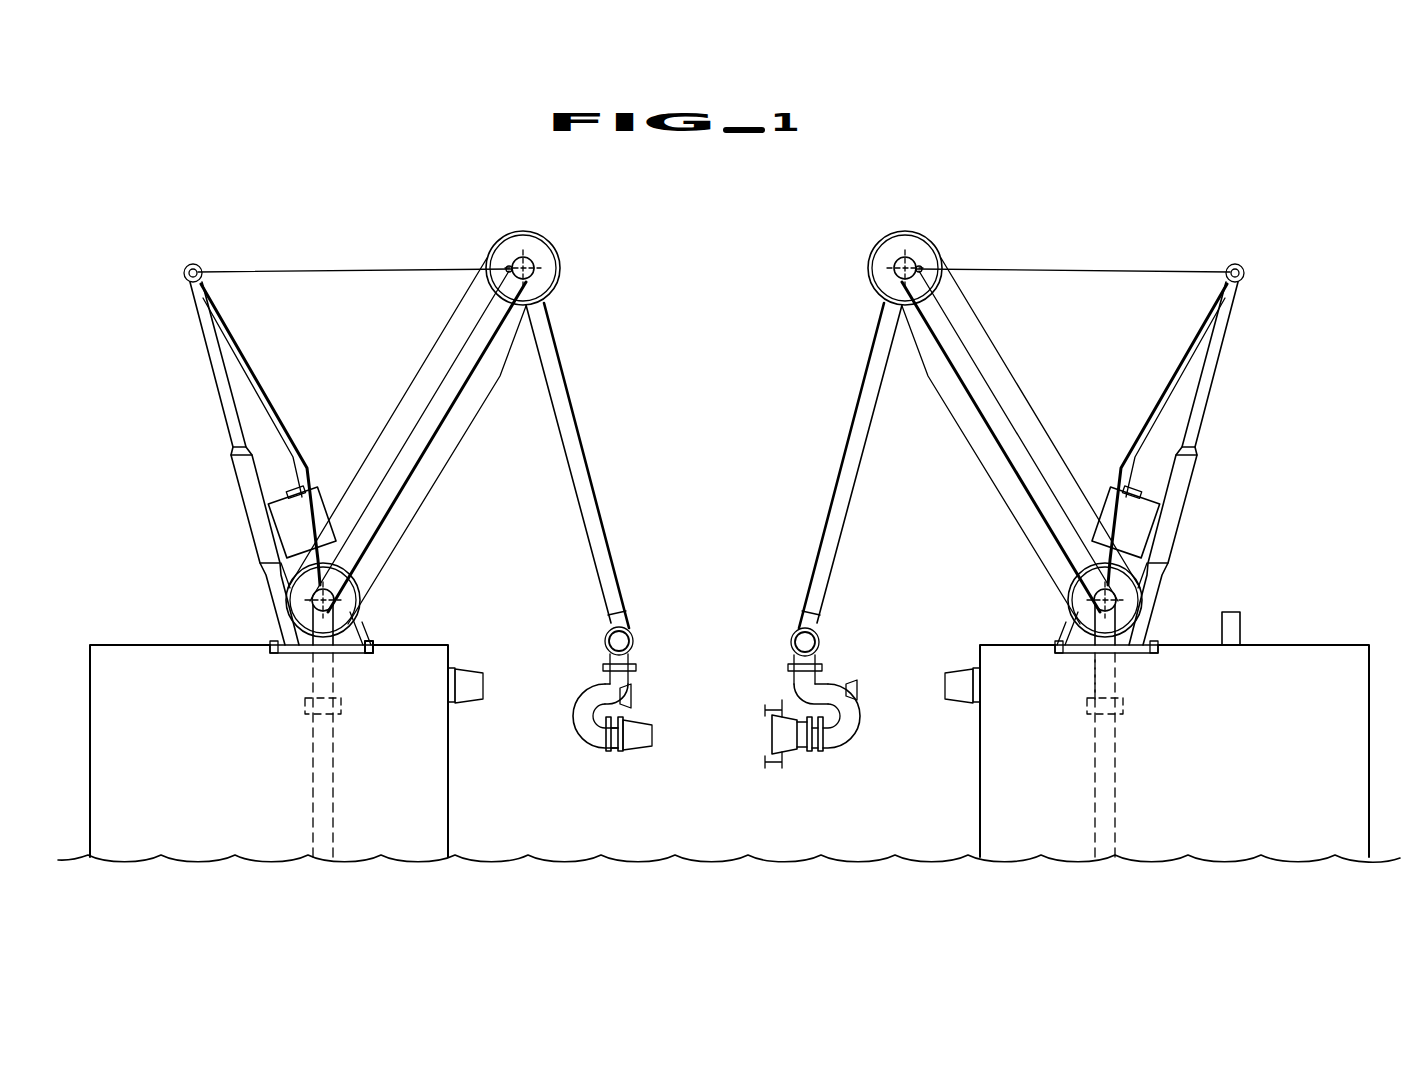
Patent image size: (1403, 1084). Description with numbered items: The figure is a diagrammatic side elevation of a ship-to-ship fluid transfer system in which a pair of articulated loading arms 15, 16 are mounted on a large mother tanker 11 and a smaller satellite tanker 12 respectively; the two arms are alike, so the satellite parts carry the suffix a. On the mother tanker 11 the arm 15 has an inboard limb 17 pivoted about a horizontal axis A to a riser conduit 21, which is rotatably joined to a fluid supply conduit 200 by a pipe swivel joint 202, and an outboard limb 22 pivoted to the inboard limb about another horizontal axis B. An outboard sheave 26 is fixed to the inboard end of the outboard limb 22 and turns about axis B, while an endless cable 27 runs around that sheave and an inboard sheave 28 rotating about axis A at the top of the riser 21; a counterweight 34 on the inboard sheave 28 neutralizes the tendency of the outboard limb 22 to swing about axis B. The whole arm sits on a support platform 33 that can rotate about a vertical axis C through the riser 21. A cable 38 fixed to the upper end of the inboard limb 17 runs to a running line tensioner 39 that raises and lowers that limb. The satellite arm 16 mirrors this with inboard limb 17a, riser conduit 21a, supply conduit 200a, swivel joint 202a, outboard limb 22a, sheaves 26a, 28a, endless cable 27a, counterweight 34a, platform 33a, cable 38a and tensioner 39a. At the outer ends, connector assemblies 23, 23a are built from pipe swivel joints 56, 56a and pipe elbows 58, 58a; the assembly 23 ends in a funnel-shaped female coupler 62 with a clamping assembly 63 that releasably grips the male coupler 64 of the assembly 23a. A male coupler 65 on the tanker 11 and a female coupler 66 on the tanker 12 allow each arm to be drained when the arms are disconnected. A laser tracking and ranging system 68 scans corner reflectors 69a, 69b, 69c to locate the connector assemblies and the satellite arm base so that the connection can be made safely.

The mother ship or tanker 11 is at (1285, 748).
The satellite ship or tanker 12 is at (144, 748).
The articulated loading arm 15 is at (1288, 320).
The articulated loading arm 16 is at (186, 355).
The inboard limb 17 is at (977, 366).
The inboard limb 17a is at (452, 368).
The riser conduit 21 is at (1110, 622).
The riser conduit 21a is at (315, 624).
The outboard limb 22 is at (872, 339).
The outboard limb 22a is at (549, 335).
The connector assembly 23 is at (848, 746).
The connector assembly 23a is at (580, 745).
The outboard sheave 26 is at (902, 240).
The outboard sheave 26a is at (525, 240).
The endless cable 27 is at (987, 328).
The endless cable 27a is at (437, 337).
The inboard sheave 28 is at (1133, 598).
The inboard sheave 28a is at (311, 600).
The support platform 33 is at (1067, 642).
The support platform 33a is at (371, 650).
The counterweight 34 is at (1147, 539).
The counterweight 34a is at (283, 527).
The cable 38 is at (1067, 276).
The cable 38a is at (307, 270).
The running line tensioner 39 is at (1180, 519).
The running line tensioner 39a is at (240, 482).
The pipe swivel joint 56 is at (790, 667).
The pipe swivel joint 56a is at (636, 650).
The pipe elbow 58 is at (853, 731).
The pipe elbow 58a is at (590, 722).
The female coupler 62 is at (778, 736).
The clamping assembly 63 is at (762, 770).
The male coupler 64 is at (637, 727).
The male coupler 65 is at (959, 668).
The female coupler 66 is at (474, 677).
The laser based tracking and ranging system 68 is at (1242, 627).
The corner reflector 69a is at (369, 640).
The corner reflector 69b is at (632, 696).
The corner reflector 69c is at (858, 694).
The fluid supply conduit 200 is at (1115, 745).
The fluid supply conduit 200a is at (312, 760).
The pipe swivel joint 202 is at (1123, 702).
The pipe swivel joint 202a is at (305, 702).
The horizontal axis A is at (1068, 588).
The horizontal axis B is at (882, 264).
The vertical axis C is at (1093, 683).